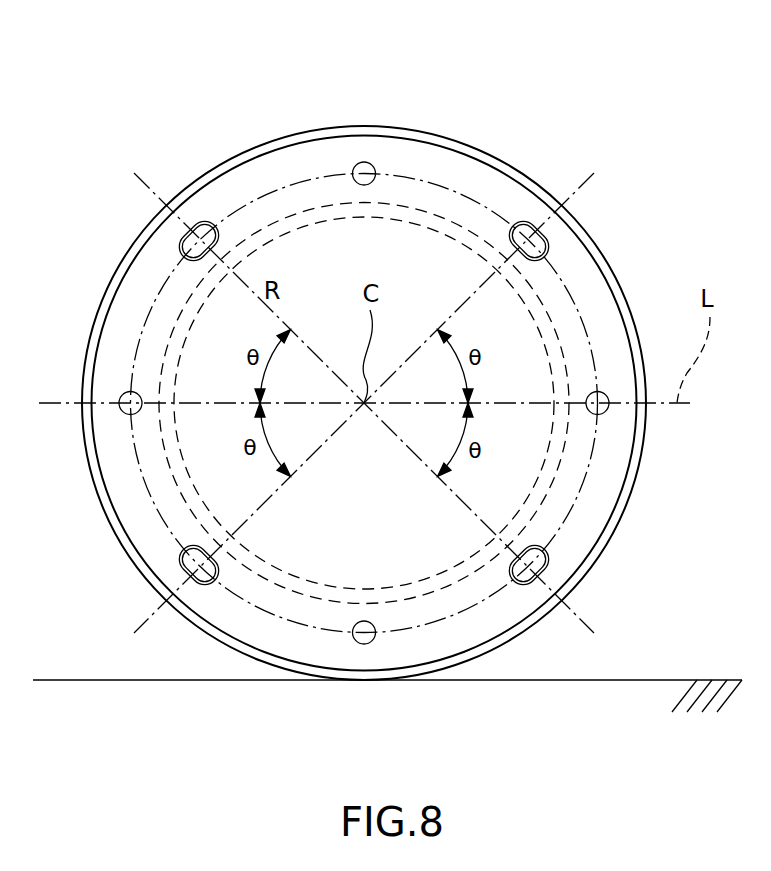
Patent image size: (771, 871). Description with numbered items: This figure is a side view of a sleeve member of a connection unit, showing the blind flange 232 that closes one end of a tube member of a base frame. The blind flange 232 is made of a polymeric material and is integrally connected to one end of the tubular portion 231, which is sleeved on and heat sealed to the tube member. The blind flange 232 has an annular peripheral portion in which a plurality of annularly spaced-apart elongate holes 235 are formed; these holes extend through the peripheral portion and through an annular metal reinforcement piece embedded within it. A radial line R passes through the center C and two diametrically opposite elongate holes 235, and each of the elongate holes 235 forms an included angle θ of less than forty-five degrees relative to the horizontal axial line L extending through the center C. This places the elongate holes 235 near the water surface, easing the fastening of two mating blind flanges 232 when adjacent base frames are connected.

The tubular portion 231 is at (403, 203).
The blind flange 232 is at (372, 126).
The elongate holes 235 is at (197, 237).